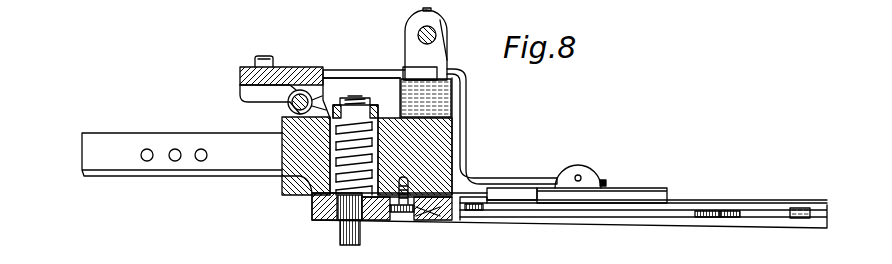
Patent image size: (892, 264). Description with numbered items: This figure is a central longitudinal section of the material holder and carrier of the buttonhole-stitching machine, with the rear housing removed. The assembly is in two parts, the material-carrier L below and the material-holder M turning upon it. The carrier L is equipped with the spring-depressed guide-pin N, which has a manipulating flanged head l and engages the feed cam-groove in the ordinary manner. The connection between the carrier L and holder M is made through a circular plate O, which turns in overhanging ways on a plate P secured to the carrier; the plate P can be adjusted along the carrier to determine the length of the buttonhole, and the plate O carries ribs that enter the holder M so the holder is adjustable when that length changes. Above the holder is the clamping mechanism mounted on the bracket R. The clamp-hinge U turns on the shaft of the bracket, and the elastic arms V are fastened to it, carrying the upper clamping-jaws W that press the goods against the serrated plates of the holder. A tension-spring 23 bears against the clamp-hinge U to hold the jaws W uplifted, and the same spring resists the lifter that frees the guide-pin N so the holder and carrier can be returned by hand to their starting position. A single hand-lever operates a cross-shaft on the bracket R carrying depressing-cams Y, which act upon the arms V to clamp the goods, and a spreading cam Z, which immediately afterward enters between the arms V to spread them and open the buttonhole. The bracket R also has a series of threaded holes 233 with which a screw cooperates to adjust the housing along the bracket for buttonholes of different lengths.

The threaded holes 233 is at (198, 148).
The bracket R is at (282, 128).
The manipulating flanged head l is at (376, 108).
The tension-spring 23 is at (361, 98).
The elastic arms V is at (354, 74).
The spreading cam Z is at (426, 98).
The clamp-hinge U is at (240, 74).
The depressing-cams Y is at (447, 62).
The material-holder M is at (312, 197).
The spring-depressed guide-pin N is at (340, 238).
The plate P is at (426, 224).
The circular plate O is at (470, 222).
The upper clamping-jaws W is at (636, 195).
The material-carrier L is at (744, 225).